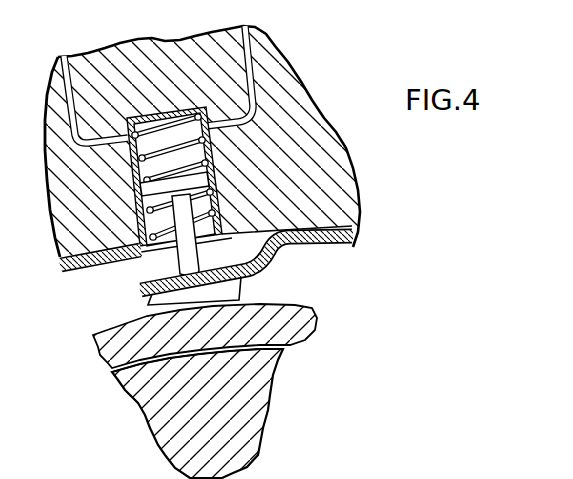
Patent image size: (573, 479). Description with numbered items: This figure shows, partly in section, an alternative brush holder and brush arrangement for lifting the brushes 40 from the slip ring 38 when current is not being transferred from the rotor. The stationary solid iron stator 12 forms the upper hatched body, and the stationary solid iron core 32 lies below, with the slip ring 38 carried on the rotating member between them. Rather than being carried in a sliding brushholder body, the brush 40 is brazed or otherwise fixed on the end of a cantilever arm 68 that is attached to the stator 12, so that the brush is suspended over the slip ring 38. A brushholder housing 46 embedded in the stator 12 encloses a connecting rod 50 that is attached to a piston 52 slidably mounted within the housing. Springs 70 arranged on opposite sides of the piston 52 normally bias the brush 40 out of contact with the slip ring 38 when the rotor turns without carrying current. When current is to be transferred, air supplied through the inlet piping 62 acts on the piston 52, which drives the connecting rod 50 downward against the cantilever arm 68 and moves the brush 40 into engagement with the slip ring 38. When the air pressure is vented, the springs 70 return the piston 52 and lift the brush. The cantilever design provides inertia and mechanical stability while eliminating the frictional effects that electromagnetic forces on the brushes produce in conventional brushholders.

The stator 12 is at (350, 183).
The stationary solid iron core 32 is at (258, 425).
The slip ring 38 is at (293, 333).
The brush 40 is at (155, 303).
The brushholder housing 46 is at (216, 146).
The connecting rod 50 is at (220, 202).
The piston 52 is at (219, 172).
The inlet piping 62 is at (250, 44).
The cantilever arm 68 is at (260, 272).
The springs 70 is at (137, 210).